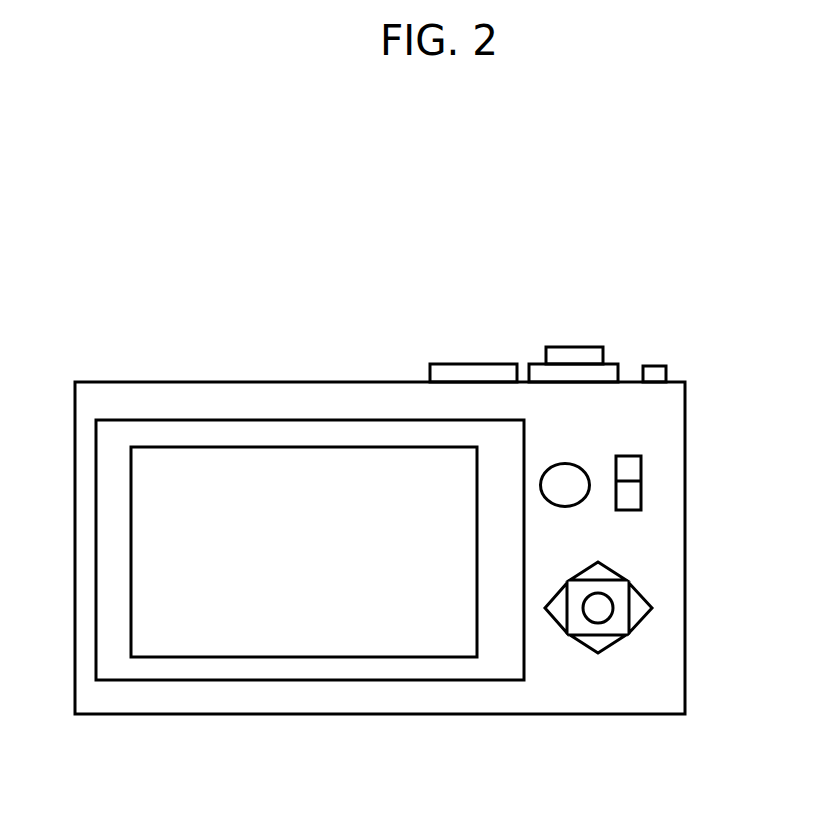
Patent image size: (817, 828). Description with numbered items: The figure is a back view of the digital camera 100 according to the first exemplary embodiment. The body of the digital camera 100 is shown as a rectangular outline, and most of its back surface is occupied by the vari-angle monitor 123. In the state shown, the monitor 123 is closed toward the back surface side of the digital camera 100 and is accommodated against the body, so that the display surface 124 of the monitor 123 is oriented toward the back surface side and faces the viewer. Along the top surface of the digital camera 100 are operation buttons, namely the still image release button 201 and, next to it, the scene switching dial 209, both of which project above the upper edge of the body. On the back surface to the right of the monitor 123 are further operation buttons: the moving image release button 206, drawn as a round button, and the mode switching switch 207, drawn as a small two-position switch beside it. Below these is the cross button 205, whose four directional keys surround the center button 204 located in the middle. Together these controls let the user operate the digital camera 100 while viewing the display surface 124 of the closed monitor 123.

The digital camera 100 is at (152, 296).
The vari-angle monitor 123 is at (305, 666).
The display surface 124 is at (430, 632).
The still image release button 201 is at (583, 355).
The scene switching dial 209 is at (479, 371).
The moving image release button 206 is at (569, 485).
The mode switching switch 207 is at (631, 498).
The center button 204 is at (597, 605).
The cross button 205 is at (595, 643).